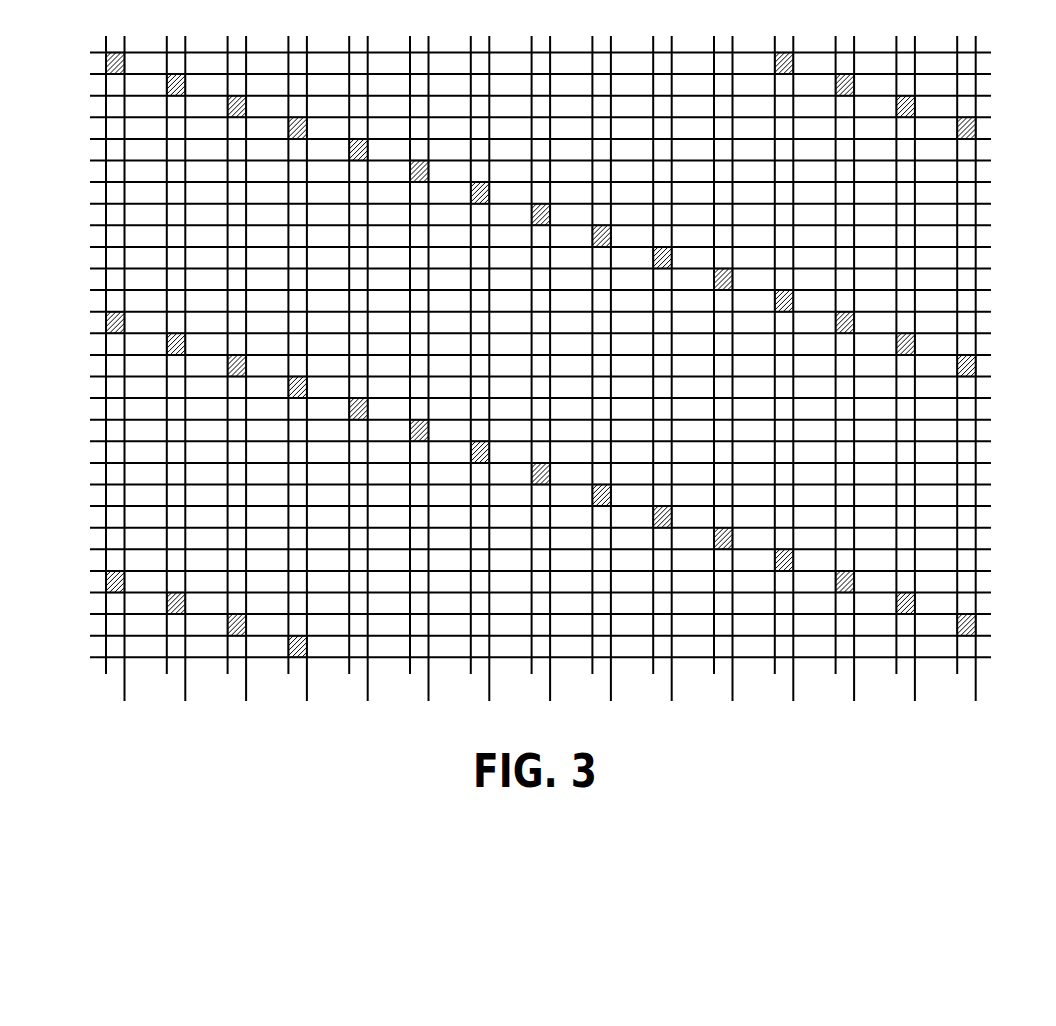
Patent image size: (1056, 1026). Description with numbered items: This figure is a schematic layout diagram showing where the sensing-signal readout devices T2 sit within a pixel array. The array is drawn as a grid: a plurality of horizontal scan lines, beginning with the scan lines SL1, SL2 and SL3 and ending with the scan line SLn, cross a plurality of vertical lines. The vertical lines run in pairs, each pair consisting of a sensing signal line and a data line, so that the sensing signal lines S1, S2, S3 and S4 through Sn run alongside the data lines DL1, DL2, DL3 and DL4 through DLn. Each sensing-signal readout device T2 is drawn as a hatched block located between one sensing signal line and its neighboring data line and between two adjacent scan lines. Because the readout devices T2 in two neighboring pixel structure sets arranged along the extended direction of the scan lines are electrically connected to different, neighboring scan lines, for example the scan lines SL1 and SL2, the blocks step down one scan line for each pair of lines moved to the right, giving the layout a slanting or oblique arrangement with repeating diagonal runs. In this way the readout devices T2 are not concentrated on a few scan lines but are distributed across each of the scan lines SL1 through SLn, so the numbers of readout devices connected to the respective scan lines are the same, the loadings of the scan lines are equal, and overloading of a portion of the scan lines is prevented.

The sensing-signal readout device T2 is at (111, 65).
The scan line SL1 is at (525, 52).
The scan line SL2 is at (525, 73).
The scan line SL3 is at (525, 95).
The scan line SLn is at (525, 656).
The sensing signal line S1 is at (104, 370).
The sensing signal line S2 is at (164, 370).
The sensing signal line S3 is at (225, 370).
The sensing signal line S4 is at (286, 370).
The sensing signal line Sn is at (955, 370).
The data line DL1 is at (127, 383).
The data line DL2 is at (187, 383).
The data line DL3 is at (248, 383).
The data line DL4 is at (309, 383).
The data line DLn is at (978, 383).